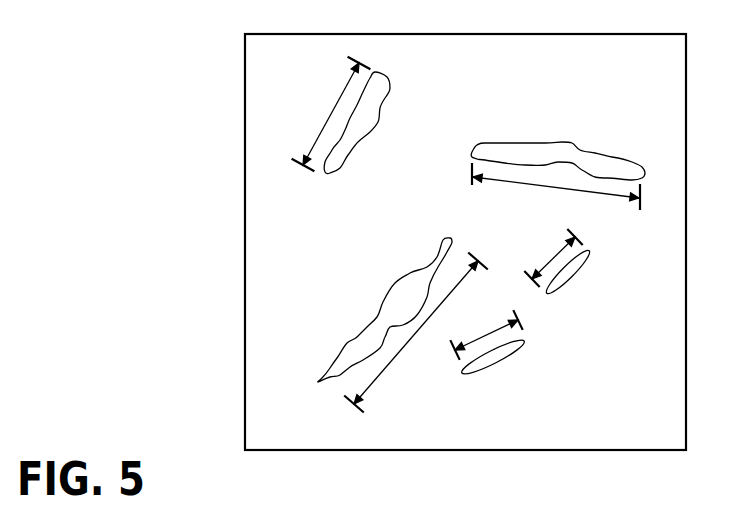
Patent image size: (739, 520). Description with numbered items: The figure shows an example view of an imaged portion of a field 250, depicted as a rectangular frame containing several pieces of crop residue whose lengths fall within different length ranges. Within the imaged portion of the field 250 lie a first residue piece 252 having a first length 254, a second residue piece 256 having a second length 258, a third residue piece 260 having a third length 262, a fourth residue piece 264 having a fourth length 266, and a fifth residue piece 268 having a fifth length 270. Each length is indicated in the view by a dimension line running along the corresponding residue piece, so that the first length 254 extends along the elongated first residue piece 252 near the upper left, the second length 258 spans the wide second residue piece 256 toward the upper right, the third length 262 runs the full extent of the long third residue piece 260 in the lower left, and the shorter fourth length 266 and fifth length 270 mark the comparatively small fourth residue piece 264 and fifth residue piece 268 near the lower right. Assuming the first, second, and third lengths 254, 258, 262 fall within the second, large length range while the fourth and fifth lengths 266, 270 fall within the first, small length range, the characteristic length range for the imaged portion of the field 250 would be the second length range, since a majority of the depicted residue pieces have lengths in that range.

The imaged portion of the field 250 is at (180, 101).
The first residue piece 252 is at (365, 133).
The first length 254 is at (329, 116).
The second residue piece 256 is at (596, 193).
The second length 258 is at (562, 142).
The third residue piece 260 is at (382, 302).
The third length 262 is at (391, 362).
The fourth residue piece 264 is at (508, 356).
The fourth length 266 is at (485, 333).
The fifth residue piece 268 is at (576, 270).
The fifth length 270 is at (533, 204).